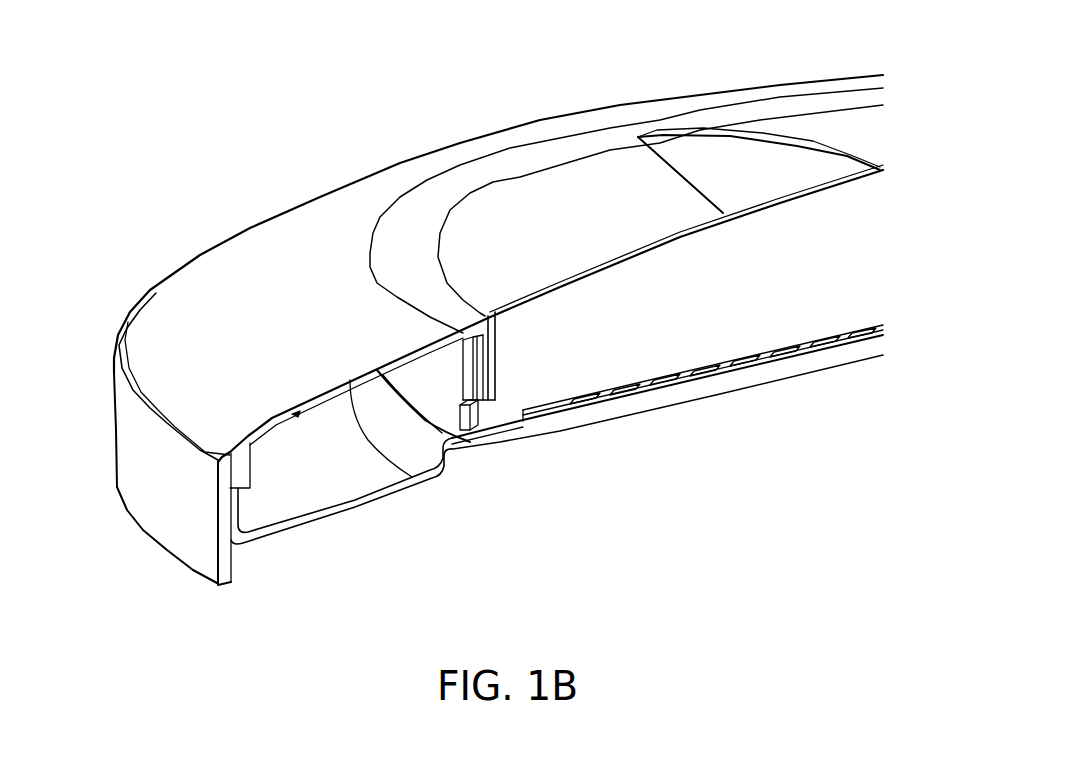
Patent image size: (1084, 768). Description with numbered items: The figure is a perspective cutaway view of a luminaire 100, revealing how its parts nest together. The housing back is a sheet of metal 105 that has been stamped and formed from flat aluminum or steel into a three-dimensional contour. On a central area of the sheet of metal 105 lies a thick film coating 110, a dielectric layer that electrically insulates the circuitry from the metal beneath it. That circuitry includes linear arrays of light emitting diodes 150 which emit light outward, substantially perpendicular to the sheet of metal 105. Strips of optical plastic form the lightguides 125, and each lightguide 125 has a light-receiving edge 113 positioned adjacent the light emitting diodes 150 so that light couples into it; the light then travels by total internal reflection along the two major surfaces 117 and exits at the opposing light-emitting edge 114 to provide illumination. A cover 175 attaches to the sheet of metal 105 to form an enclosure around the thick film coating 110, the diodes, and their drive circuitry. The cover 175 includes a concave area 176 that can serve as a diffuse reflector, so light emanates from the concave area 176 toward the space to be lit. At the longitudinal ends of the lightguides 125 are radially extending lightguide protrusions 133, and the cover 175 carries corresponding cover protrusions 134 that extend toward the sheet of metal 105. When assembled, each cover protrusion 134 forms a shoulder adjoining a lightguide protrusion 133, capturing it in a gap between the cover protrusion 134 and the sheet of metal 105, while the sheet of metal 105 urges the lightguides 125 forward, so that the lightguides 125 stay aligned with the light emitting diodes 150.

The luminaire 100 is at (312, 103).
The sheet of metal 105 is at (402, 500).
The thick film coating 110 is at (554, 436).
The light-receiving edge 113 is at (803, 322).
The light-emitting edge 114 is at (816, 132).
The major surface 117 is at (573, 361).
The lightguide 125 is at (775, 184).
The lightguide protrusion 133 is at (488, 432).
The cover protrusion 134 is at (460, 343).
The light emitting diode 150 is at (737, 439).
The cover 175 is at (292, 340).
The concave area 176 is at (516, 236).